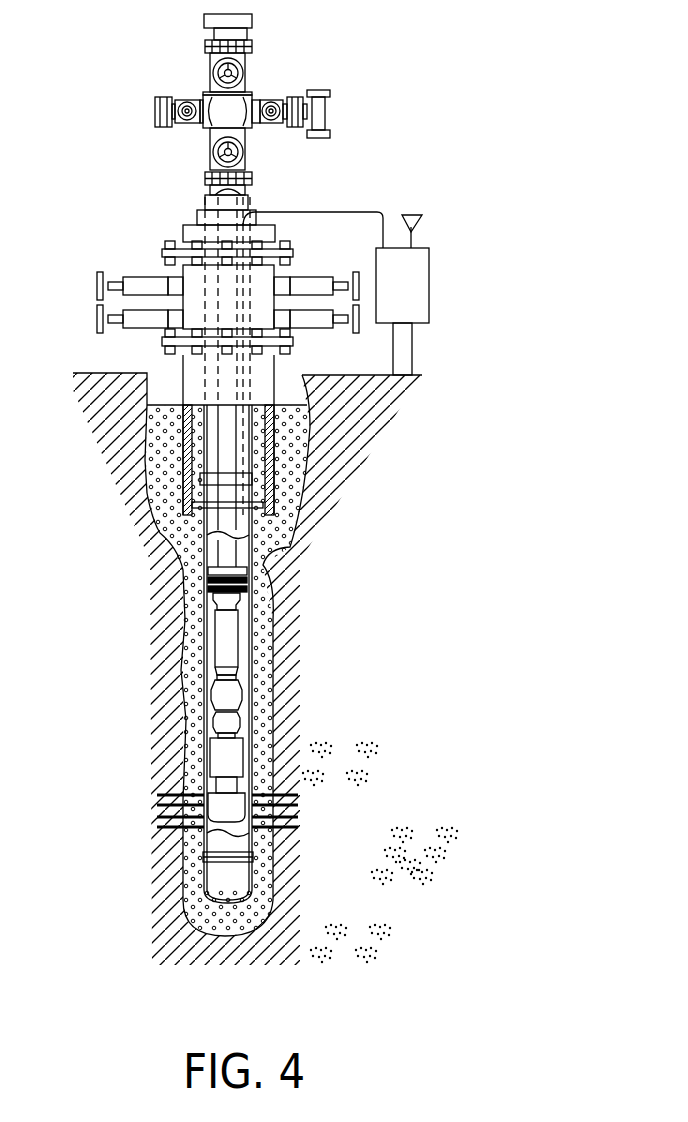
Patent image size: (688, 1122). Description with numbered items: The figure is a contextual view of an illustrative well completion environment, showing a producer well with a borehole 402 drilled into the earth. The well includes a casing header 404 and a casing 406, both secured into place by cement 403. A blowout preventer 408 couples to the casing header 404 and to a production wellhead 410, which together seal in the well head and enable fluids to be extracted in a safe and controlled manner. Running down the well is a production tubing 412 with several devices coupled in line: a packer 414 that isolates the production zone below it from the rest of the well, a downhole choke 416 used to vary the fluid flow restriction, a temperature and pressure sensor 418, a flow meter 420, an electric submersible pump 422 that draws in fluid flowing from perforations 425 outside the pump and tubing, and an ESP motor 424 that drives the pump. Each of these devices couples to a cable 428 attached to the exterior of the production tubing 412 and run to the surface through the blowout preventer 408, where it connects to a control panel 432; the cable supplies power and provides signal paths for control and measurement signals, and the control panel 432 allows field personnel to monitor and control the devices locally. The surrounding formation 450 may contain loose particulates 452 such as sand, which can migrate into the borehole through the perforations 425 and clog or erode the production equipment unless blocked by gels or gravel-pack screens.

The borehole 402 is at (145, 422).
The cement 403 is at (178, 528).
The casing header 404 is at (183, 445).
The casing 406 is at (207, 665).
The blowout preventer 408 is at (183, 277).
The production wellhead 410 is at (203, 123).
The production tubing 412 is at (217, 556).
The packer 414 is at (217, 592).
The downhole choke 416 is at (220, 630).
The temperature and pressure sensor 418 is at (217, 690).
The flow meter 420 is at (215, 717).
The electric submersible pump 422 is at (217, 748).
The ESP motor 424 is at (228, 812).
The perforations 425 is at (140, 793).
The cable 428 is at (337, 210).
The control panel 432 is at (412, 307).
The formation 450 is at (378, 868).
The particulates 452 is at (433, 863).